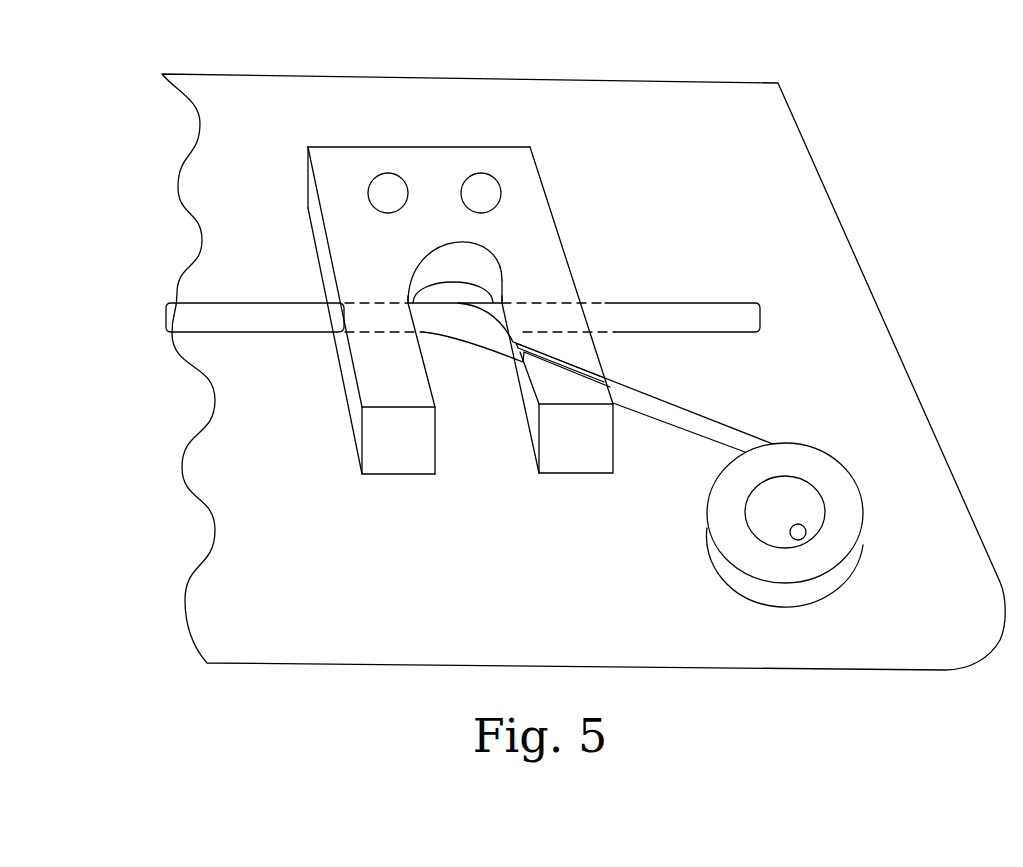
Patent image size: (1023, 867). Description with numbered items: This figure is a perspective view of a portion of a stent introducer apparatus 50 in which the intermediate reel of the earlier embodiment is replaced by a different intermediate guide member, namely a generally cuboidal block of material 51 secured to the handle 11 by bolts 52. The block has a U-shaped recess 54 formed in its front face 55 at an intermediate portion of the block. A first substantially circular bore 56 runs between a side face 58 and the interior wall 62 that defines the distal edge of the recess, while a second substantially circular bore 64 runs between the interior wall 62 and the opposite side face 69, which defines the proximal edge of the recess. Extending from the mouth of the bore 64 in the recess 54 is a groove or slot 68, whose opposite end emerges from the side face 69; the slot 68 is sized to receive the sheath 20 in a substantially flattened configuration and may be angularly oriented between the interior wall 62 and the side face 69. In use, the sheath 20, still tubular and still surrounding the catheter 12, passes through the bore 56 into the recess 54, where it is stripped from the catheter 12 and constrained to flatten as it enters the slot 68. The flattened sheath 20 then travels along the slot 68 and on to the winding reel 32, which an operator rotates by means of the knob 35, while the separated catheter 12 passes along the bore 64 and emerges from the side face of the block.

The handle part 11 is at (878, 327).
The catheter 12 is at (668, 306).
The sheath 20 is at (257, 304).
The reel 32 is at (817, 472).
The knob 35 is at (806, 532).
The stent introducer apparatus 50 is at (886, 203).
The block of material 51 is at (533, 198).
The bolts 52 is at (384, 188).
The recess 54 is at (488, 430).
The front face 55 is at (402, 462).
The first bore 56 is at (366, 312).
The side face 58 is at (347, 388).
The interior wall 62 is at (525, 398).
The second bore 64 is at (534, 314).
The slot 68 is at (578, 366).
The side face 69 is at (562, 233).